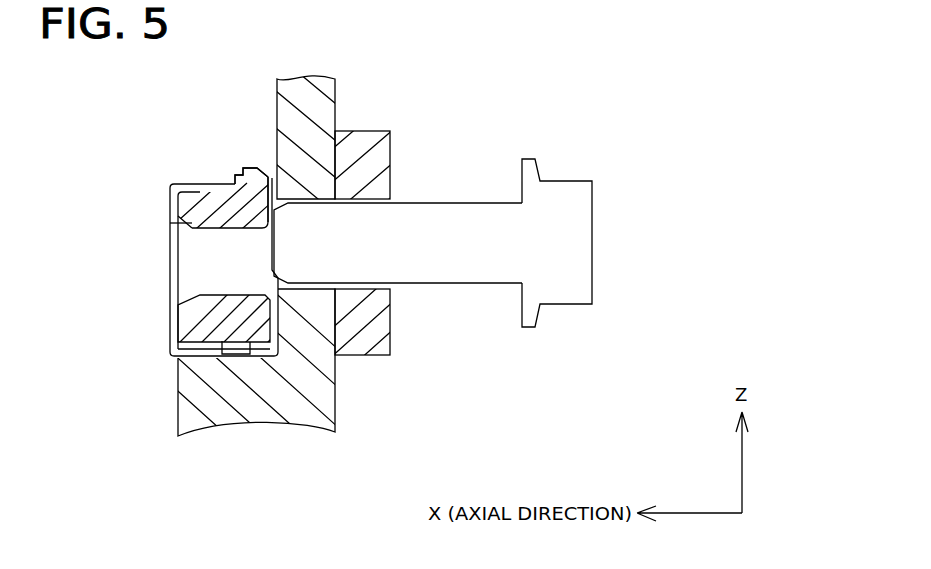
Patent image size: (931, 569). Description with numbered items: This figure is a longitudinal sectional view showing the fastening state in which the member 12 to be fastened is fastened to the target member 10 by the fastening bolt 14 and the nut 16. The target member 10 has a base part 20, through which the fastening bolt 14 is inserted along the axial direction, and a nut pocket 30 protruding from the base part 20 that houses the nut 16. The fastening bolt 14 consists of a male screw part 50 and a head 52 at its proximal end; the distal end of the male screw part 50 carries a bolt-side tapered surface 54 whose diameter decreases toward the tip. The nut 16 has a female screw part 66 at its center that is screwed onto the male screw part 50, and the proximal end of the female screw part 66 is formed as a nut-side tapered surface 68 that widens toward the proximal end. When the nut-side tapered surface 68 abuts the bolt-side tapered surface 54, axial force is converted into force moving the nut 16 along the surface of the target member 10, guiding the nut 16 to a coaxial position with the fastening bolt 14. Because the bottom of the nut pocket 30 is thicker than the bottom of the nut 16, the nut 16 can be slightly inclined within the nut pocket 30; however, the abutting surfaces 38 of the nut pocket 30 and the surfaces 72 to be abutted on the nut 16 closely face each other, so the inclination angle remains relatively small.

The target member 10 is at (327, 293).
The base part 20 is at (256, 293).
The member to be fastened 12 is at (373, 143).
The fastening bolt 14 is at (440, 258).
The nut 16 is at (160, 167).
The nut pocket 30 is at (195, 247).
The abutting surfaces 38 is at (248, 355).
The male screw part 50 is at (435, 222).
The head 52 is at (573, 197).
The bolt-side tapered surface 54 is at (263, 192).
The female screw part 66 is at (200, 228).
The nut-side tapered surface 68 is at (320, 293).
The surfaces to be abutted 72 is at (213, 367).